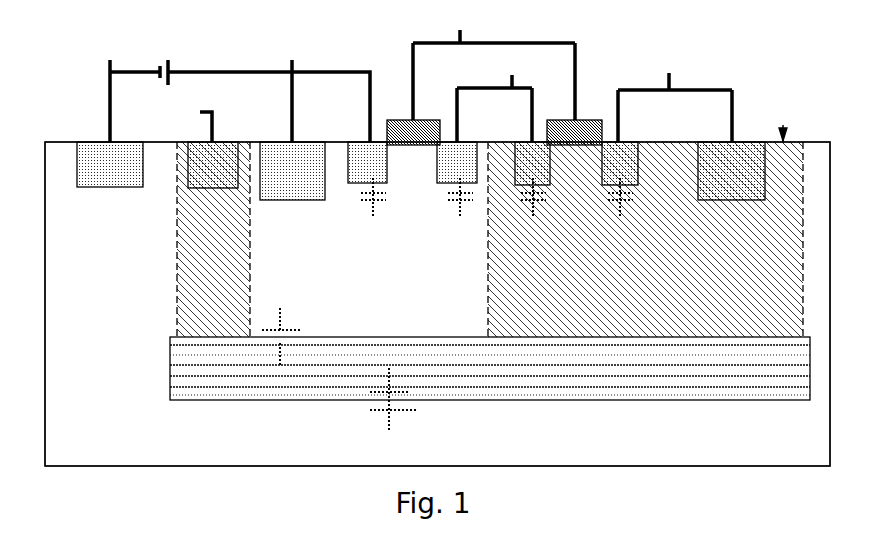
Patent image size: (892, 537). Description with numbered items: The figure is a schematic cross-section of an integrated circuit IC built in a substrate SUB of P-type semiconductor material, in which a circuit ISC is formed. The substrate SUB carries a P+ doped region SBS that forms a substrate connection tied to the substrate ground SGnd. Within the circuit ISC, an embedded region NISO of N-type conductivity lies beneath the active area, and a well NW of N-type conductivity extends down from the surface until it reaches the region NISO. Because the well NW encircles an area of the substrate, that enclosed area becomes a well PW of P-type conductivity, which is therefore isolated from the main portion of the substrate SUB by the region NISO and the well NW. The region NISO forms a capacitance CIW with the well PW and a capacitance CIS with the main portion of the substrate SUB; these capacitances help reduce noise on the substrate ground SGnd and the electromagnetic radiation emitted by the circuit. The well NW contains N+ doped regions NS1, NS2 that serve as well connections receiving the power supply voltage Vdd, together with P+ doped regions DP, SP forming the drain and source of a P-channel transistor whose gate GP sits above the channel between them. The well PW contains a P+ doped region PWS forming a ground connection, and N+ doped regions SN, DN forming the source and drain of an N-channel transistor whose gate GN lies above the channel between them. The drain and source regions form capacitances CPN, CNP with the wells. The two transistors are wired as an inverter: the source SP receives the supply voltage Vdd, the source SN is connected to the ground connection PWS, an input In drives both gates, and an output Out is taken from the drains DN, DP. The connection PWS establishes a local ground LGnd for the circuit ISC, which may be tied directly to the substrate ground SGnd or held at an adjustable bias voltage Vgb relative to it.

The integrated circuit IC is at (130, 467).
The substrate SUB is at (437, 304).
The embedded region NISO is at (490, 368).
The well of N-type conductivity NW is at (490, 239).
The well of P-type conductivity PW is at (369, 239).
The P+ doped region SBS is at (90, 142).
The N+ doped region NS2 is at (232, 142).
The P+ doped region PWS is at (292, 171).
The source region SN is at (362, 142).
The drain region DN is at (450, 142).
The drain region DP is at (540, 142).
The source region SP is at (625, 142).
The N+ doped region NS1 is at (731, 171).
The gate GN is at (403, 120).
The gate GP is at (583, 120).
The substrate ground SGnd is at (123, 91).
The bias voltage Vgb is at (184, 67).
The local ground LGnd is at (269, 91).
The power supply voltage Vdd is at (444, 98).
The input In is at (494, 64).
The output Out is at (494, 98).
The circuit ISC is at (784, 124).
The capacitance CNP is at (460, 205).
The capacitance CPN is at (535, 205).
The capacitance CIW is at (286, 326).
The capacitance CIS is at (418, 412).